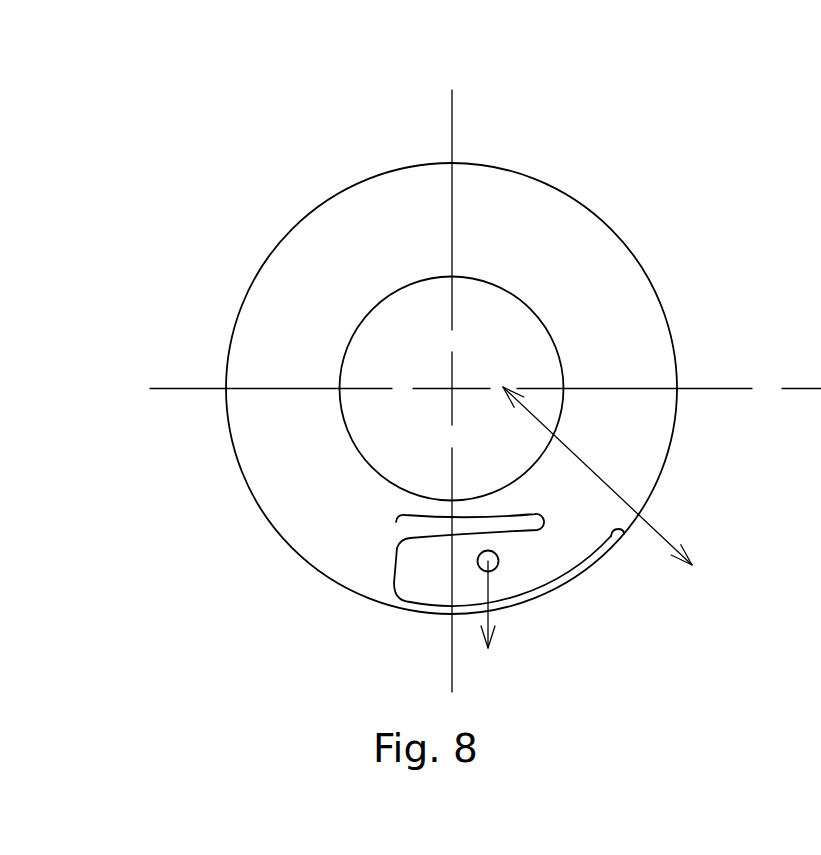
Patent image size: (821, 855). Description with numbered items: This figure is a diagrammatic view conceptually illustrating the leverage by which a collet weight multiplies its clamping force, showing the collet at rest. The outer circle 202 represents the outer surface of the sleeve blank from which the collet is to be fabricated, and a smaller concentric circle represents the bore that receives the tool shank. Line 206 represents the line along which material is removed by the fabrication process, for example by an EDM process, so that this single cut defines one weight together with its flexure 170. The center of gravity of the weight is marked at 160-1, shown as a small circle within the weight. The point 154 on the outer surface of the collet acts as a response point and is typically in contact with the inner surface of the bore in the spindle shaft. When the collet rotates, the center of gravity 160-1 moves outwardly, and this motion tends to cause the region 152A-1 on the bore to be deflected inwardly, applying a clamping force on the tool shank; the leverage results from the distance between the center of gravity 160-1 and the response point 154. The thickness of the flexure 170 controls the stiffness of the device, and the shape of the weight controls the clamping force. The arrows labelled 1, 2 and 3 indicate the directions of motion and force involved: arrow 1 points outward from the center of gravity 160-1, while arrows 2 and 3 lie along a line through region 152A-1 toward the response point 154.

The outer surface circle 202 is at (454, 322).
The flexure 170 is at (471, 391).
The clamping region 152A-1 is at (571, 353).
The material removal line 206 is at (366, 560).
The response point 154 is at (689, 499).
The center of gravity of the weight 160-1 is at (600, 645).
The direction 1 is at (488, 634).
The direction 2 is at (604, 502).
The direction 3 is at (499, 415).